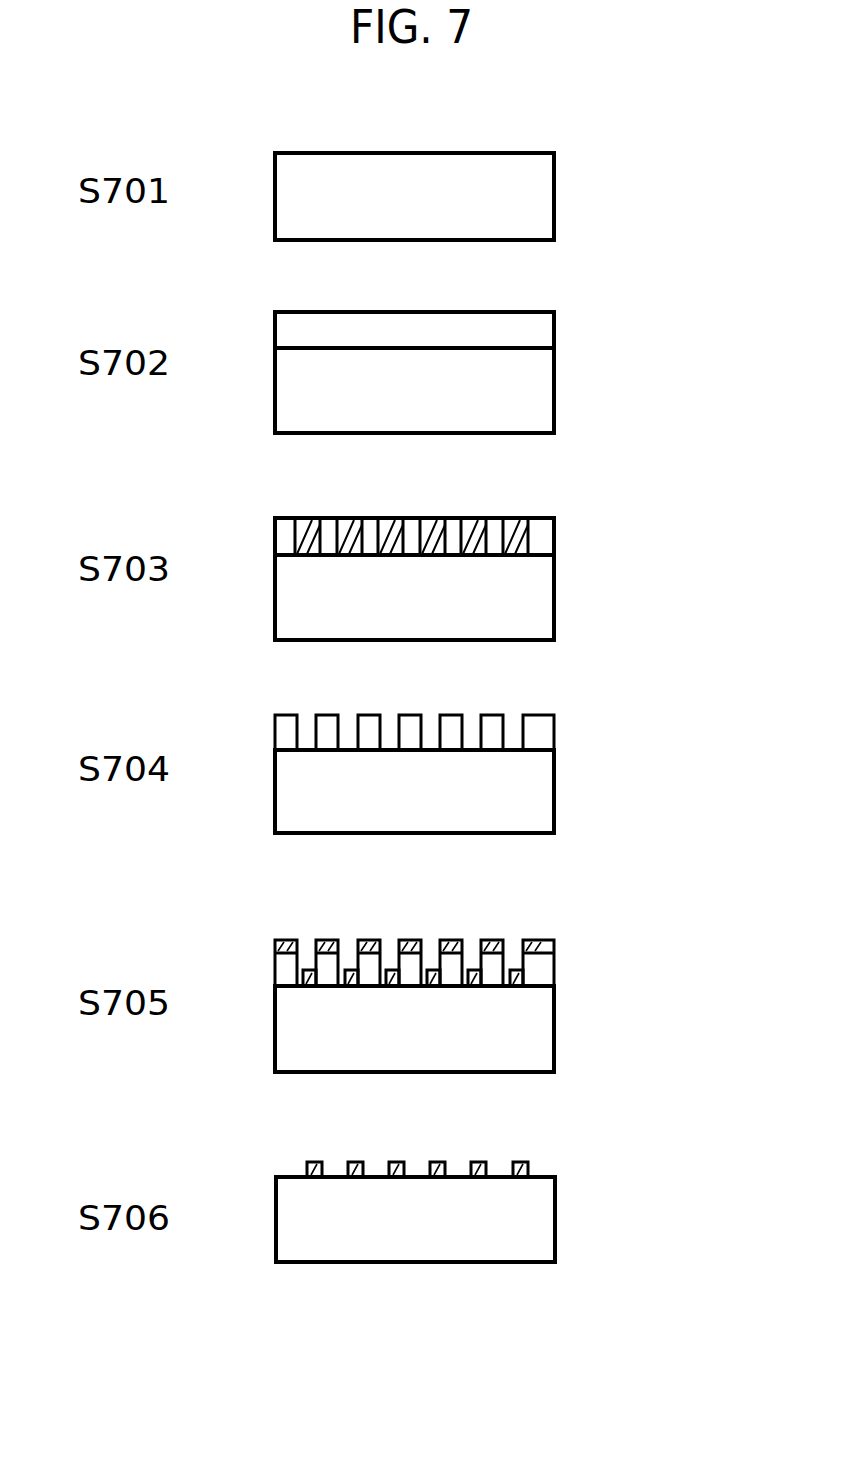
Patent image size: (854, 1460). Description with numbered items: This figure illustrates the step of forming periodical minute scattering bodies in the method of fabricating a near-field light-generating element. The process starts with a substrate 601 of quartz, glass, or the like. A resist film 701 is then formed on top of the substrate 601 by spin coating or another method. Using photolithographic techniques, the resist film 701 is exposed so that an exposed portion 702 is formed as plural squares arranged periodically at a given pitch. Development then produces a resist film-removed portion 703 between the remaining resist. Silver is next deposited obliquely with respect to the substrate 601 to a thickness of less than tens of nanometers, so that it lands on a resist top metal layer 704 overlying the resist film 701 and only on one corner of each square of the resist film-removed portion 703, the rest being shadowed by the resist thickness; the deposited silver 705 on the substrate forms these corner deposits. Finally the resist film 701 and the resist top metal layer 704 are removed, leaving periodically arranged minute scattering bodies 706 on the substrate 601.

The substrate 601 is at (553, 195).
The resist film 701 is at (553, 330).
The exposed portion 702 is at (517, 518).
The resist film-removed portion 703 is at (510, 735).
The resist top metal layer 704 is at (554, 940).
The metal film on substrate 705 is at (518, 986).
The minute scattering bodies 706 is at (527, 1177).